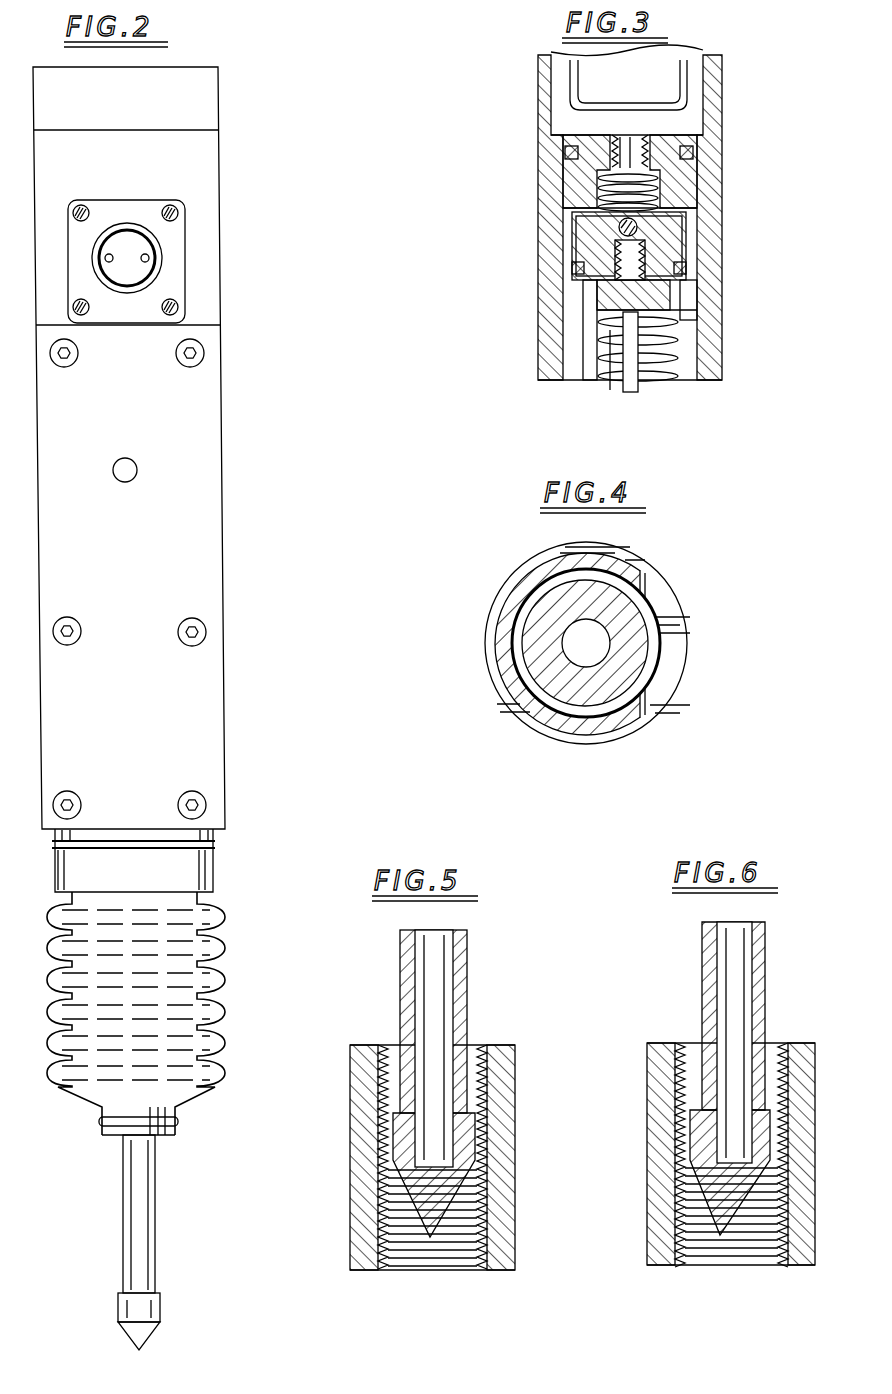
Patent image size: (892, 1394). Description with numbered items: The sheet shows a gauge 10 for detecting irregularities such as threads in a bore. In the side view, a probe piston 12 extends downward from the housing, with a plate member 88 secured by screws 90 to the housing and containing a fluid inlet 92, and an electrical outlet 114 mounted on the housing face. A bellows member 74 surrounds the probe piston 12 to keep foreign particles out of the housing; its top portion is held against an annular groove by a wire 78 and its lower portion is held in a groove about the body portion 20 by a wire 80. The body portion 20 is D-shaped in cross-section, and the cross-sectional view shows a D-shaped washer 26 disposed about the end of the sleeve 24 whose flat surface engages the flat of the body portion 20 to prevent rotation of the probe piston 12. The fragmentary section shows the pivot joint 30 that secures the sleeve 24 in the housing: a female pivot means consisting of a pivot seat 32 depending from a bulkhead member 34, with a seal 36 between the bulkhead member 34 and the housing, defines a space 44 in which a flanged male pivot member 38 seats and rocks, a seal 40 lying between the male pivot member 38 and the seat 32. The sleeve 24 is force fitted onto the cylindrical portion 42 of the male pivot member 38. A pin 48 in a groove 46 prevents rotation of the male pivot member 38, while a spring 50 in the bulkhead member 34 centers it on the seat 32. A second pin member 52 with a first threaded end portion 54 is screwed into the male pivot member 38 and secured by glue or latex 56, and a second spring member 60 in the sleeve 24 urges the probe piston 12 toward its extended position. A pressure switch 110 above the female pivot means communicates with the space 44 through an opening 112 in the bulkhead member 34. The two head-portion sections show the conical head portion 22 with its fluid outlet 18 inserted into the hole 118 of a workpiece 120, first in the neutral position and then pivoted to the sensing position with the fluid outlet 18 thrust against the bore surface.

In FIG. 2, the gauge 10 is at (246, 572).
In FIG. 2, the probe piston 12 is at (166, 1210).
In FIG. 4, the probe piston 12 is at (650, 596).
In FIG. 5, the probe piston 12 is at (483, 975).
In FIG. 6, the probe piston 12 is at (692, 991).
In FIG. 5, the fluid outlet 18 is at (400, 1148).
In FIG. 6, the fluid outlet 18 is at (700, 1150).
In FIG. 4, the body portion 20 is at (625, 646).
In FIG. 2, the head portion 22 is at (158, 1310).
In FIG. 5, the head portion 22 is at (465, 1157).
In FIG. 6, the head portion 22 is at (716, 1215).
In FIG. 3, the sleeve 24 is at (600, 360).
In FIG. 4, the sleeve 24 is at (553, 718).
In FIG. 4, the D-shaped washer 26 is at (665, 690).
In FIG. 3, the pivot joint 30 is at (556, 168).
In FIG. 3, the pivot seat 32 is at (684, 306).
In FIG. 3, the bulkhead member 34 is at (700, 192).
In FIG. 3, the seal 36 is at (692, 152).
In FIG. 3, the male pivot member 38 is at (686, 250).
In FIG. 3, the seal 40 is at (572, 268).
In FIG. 3, the cylindrical portion 42 is at (600, 300).
In FIG. 3, the space 44 is at (565, 200).
In FIG. 3, the groove 46 is at (612, 245).
In FIG. 3, the pin 48 is at (638, 229).
In FIG. 3, the spring 50 is at (660, 186).
In FIG. 3, the second pin member 52 is at (636, 388).
In FIG. 3, the first threaded end portion 54 is at (668, 316).
In FIG. 3, the glue or latex 56 is at (645, 262).
In FIG. 3, the second spring member 60 is at (605, 390).
In FIG. 2, the bellows member 74 is at (226, 962).
In FIG. 2, the wire 78 is at (216, 846).
In FIG. 2, the wire 80 is at (178, 1122).
In FIG. 2, the plate member 88 is at (207, 437).
In FIG. 2, the screws 90 is at (179, 363).
In FIG. 2, the fluid inlet 92 is at (133, 478).
In FIG. 3, the pressure switch 110 is at (660, 70).
In FIG. 3, the opening 112 is at (630, 128).
In FIG. 2, the electrical outlet 114 is at (162, 259).
In FIG. 5, the hole 118 is at (475, 1232).
In FIG. 6, the hole 118 is at (768, 1062).
In FIG. 5, the workpiece 120 is at (512, 1072).
In FIG. 6, the workpiece 120 is at (660, 1050).